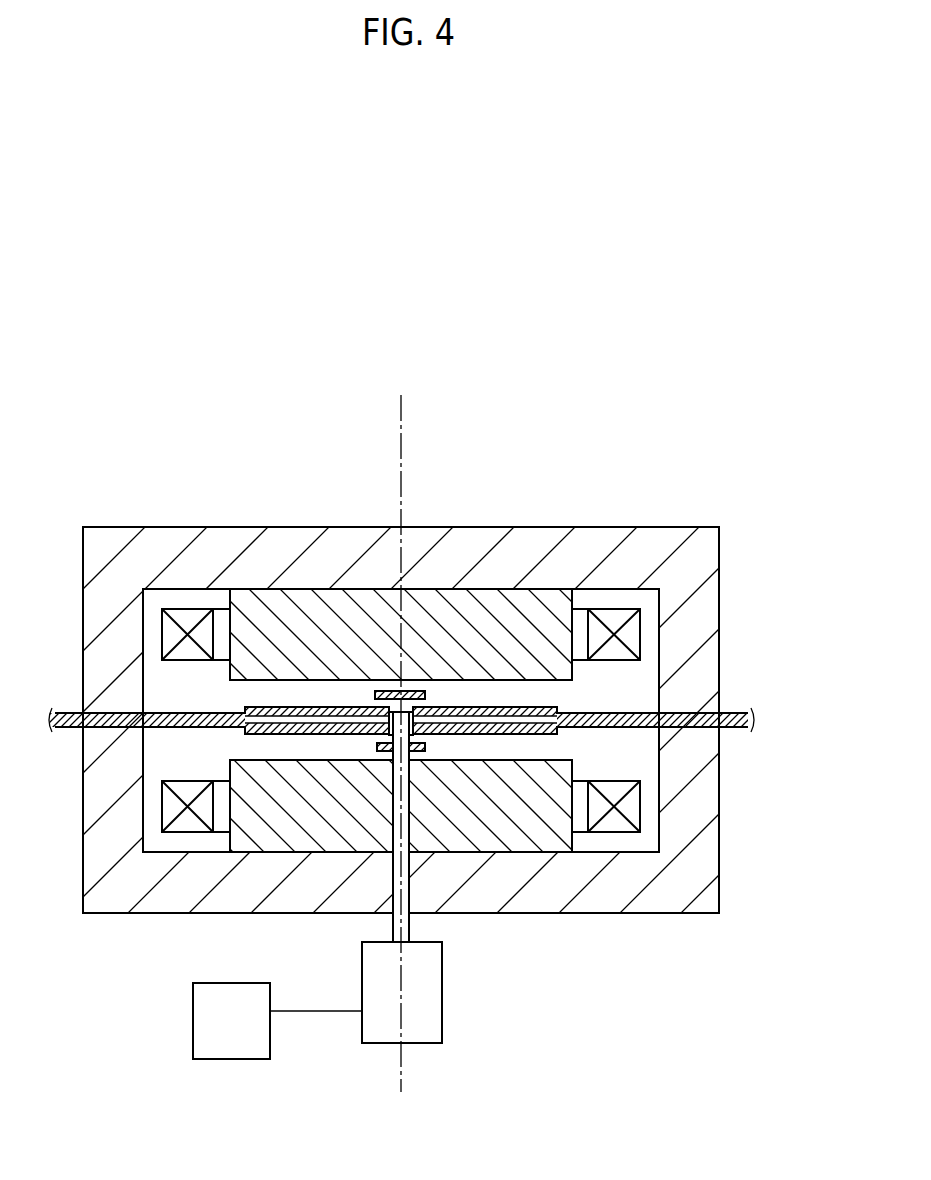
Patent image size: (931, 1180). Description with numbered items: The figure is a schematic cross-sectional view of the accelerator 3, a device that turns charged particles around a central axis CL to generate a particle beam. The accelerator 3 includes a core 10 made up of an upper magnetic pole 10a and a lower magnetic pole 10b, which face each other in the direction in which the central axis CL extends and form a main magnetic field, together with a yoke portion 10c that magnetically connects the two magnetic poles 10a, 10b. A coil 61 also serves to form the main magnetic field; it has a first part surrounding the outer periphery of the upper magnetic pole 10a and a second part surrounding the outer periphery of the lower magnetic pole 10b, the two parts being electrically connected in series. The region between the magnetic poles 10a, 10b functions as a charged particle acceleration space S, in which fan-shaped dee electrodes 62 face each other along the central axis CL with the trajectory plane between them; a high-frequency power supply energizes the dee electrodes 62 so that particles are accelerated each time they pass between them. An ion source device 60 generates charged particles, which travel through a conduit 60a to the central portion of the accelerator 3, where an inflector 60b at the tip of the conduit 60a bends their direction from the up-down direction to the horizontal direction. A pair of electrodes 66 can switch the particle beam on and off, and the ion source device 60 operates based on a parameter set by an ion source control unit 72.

The accelerator 3 is at (715, 372).
The core 10 is at (325, 479).
The upper magnetic pole 10a is at (247, 630).
The lower magnetic pole 10b is at (318, 793).
The yoke portion 10c is at (117, 547).
The coil 61 is at (605, 608).
The dee electrode 62 is at (348, 707).
The pair of electrodes 66 is at (418, 691).
The ion source device 60 is at (513, 1052).
The conduit 60a is at (410, 928).
The inflector 60b is at (377, 745).
The ion source control unit 72 is at (193, 1013).
The acceleration space S is at (502, 743).
The central axis CL is at (401, 413).